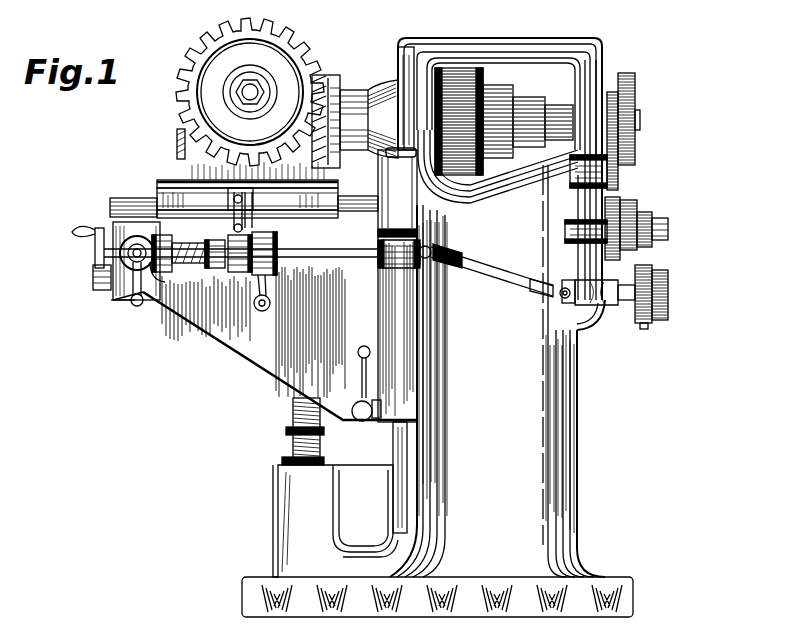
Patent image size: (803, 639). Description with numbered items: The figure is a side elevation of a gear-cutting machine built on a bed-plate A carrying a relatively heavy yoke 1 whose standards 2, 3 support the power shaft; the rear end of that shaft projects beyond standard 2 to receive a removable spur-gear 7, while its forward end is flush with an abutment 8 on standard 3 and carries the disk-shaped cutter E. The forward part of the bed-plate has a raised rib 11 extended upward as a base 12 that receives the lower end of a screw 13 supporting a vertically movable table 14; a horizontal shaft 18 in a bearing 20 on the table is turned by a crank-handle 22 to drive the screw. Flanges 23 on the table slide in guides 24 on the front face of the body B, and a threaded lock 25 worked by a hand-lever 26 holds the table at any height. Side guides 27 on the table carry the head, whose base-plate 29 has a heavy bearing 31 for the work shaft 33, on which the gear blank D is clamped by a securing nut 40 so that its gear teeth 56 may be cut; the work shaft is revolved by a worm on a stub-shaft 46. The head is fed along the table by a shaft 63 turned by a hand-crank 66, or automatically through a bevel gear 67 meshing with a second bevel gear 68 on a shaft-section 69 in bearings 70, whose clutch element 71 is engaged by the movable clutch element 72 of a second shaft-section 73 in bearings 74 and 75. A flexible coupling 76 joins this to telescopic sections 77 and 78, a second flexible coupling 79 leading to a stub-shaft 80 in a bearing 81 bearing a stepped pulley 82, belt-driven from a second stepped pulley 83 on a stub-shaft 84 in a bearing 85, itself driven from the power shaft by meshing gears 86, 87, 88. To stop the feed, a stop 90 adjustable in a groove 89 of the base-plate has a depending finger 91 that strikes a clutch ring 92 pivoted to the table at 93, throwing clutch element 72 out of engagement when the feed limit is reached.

The yoke 1 is at (525, 38).
The standard 2 is at (600, 58).
The standard 3 is at (400, 55).
The spur-gear 7 is at (636, 140).
The abutment 8 is at (370, 88).
The raised rib 11 is at (355, 551).
The base 12 is at (285, 495).
The screw 13 is at (293, 415).
The table 14 is at (213, 337).
The shaft 18 is at (93, 280).
The bearing 20 is at (112, 300).
The crank-handle 22 is at (95, 248).
The flanges 23 is at (392, 420).
The guides 24 is at (437, 90).
The threaded lock 25 is at (358, 418).
The hand-lever 26 is at (362, 362).
The guides 27 is at (112, 205).
The base-plate 29 is at (180, 180).
The bearing 31 is at (234, 222).
The work shaft 33 is at (245, 90).
The securing nut 40 is at (232, 100).
The stub-shaft 46 is at (177, 143).
The gear teeth 56 is at (228, 30).
The shaft 63 is at (120, 300).
The hand-crank 66 is at (143, 300).
The bevel gear 67 is at (136, 243).
The second bevel gear 68 is at (165, 282).
The shaft-section 69 is at (168, 244).
The bearings 70 is at (190, 265).
The clutch element 71 is at (238, 272).
The movable clutch element 72 is at (257, 300).
The second shaft-section 73 is at (300, 252).
The bearing 74 is at (272, 245).
The bearing 75 is at (378, 250).
The flexible coupling 76 is at (428, 248).
The telescopic shaft section 77 is at (462, 268).
The second telescopic section 78 is at (510, 278).
The second flexible coupling 79 is at (553, 295).
The stub-shaft 80 is at (668, 290).
The bearing 81 is at (590, 320).
The stepped pulley 82 is at (650, 322).
The second stepped pulley 83 is at (652, 218).
The stub-shaft 84 is at (668, 230).
The bearing 85 is at (572, 230).
The gear 86 is at (620, 210).
The gear 87 is at (607, 172).
The gear 88 is at (618, 108).
The groove 89 is at (187, 202).
The stop 90 is at (232, 192).
The depending finger 91 is at (217, 242).
The clutch ring 92 is at (278, 268).
The pivot 93 is at (270, 304).
The bed-plate A is at (598, 585).
The body B is at (563, 455).
The gear blank D is at (252, 86).
The cutter E is at (333, 75).
The motor G is at (535, 100).